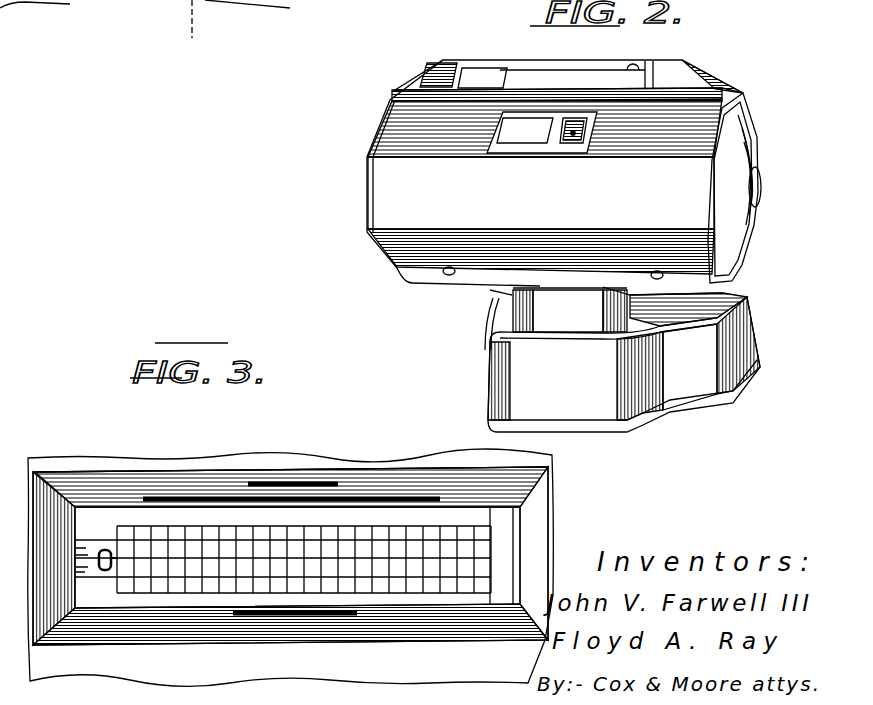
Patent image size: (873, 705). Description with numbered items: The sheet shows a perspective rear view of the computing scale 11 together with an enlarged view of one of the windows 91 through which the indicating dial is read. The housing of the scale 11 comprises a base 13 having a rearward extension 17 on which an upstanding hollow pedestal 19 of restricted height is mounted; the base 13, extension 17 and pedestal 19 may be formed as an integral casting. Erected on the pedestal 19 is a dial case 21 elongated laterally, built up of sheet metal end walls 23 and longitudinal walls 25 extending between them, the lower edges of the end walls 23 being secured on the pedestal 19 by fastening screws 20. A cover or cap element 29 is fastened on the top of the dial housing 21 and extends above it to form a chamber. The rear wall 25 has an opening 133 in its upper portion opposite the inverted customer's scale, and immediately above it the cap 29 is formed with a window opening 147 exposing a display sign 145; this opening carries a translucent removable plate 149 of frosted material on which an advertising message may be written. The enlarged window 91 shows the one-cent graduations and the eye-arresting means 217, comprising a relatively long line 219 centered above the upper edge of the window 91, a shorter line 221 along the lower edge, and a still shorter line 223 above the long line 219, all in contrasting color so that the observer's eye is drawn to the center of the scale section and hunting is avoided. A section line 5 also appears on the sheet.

In FIG. 2, the section line 5 is at (214, 20).
In FIG. 2, the computing scale 11 is at (369, 135).
In FIG. 2, the base 13 is at (486, 349).
In FIG. 2, the extension 17 is at (627, 397).
In FIG. 2, the pedestal 19 is at (548, 316).
In FIG. 2, the fastening screws 20 is at (444, 274).
In FIG. 2, the dial case 21 is at (368, 235).
In FIG. 2, the end walls 23 is at (742, 135).
In FIG. 2, the longitudinal walls 25 is at (387, 200).
In FIG. 3, the longitudinal walls 25 is at (268, 458).
In FIG. 2, the cap element 29 is at (438, 75).
In FIG. 3, the windows 91 is at (90, 506).
In FIG. 2, the opening 133 is at (580, 138).
In FIG. 2, the display sign 145 is at (508, 78).
In FIG. 2, the window opening 147 is at (645, 70).
In FIG. 2, the translucent removable plate 149 is at (570, 72).
In FIG. 3, the eye-arresting means 217 is at (384, 476).
In FIG. 3, the long line 219 is at (185, 500).
In FIG. 3, the shorter line 221 is at (272, 618).
In FIG. 3, the still shorter line 223 is at (313, 482).